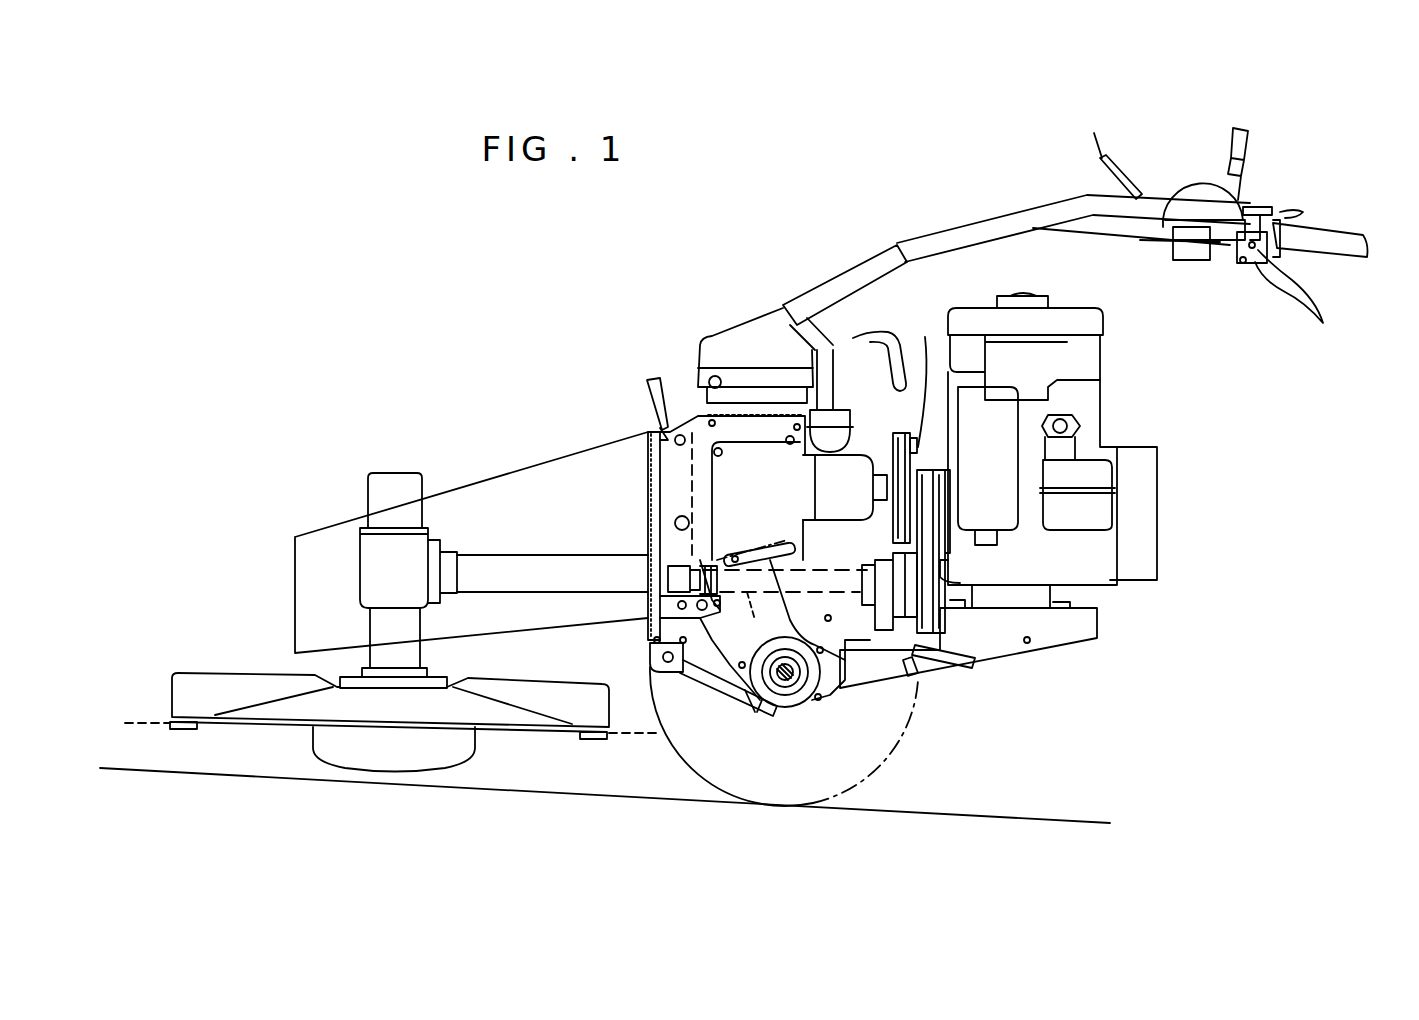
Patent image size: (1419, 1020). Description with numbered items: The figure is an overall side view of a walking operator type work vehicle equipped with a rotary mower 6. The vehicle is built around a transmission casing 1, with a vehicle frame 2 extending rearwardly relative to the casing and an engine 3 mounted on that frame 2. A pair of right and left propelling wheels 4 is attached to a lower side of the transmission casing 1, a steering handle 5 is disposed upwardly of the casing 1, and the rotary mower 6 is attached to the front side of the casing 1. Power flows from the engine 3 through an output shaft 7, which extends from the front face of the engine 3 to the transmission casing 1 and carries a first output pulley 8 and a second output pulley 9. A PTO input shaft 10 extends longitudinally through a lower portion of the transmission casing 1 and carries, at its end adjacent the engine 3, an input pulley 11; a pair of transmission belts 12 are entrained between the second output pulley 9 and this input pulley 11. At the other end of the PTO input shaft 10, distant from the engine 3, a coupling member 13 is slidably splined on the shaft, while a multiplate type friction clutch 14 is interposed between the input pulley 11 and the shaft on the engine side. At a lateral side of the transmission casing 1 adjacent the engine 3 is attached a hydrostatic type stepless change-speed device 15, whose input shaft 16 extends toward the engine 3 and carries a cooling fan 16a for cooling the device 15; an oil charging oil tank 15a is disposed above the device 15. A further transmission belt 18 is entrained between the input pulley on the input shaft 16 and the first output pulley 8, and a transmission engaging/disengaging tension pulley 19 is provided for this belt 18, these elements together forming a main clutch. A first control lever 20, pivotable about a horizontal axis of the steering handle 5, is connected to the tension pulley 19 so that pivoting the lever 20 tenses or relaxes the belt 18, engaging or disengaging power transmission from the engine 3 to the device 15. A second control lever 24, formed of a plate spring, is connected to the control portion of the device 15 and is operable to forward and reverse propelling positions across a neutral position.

The transmission casing 1 is at (812, 700).
The vehicle frame 2 is at (1008, 648).
The engine 3 is at (958, 380).
The propelling wheels 4 is at (913, 740).
The steering handle 5 is at (1350, 233).
The rotary mower 6 is at (230, 637).
The output shaft 7 is at (945, 497).
The first output pulley 8 is at (910, 467).
The second output pulley 9 is at (945, 515).
The PTO input shaft 10 is at (756, 616).
The input pulley 11 is at (938, 565).
The transmission belts 12 is at (915, 657).
The coupling member 13 is at (673, 558).
The multiplate type friction clutch 14 is at (917, 633).
The hydrostatic type stepless change-speed device 15 is at (853, 432).
The oil charging oil tank 15a is at (820, 333).
The input shaft 16 is at (873, 490).
The cooling fan 16a is at (835, 520).
The transmission belt 18 is at (908, 441).
The tension pulley 19 is at (925, 376).
The first control lever 20 is at (1108, 147).
The second control lever 24 is at (1247, 140).